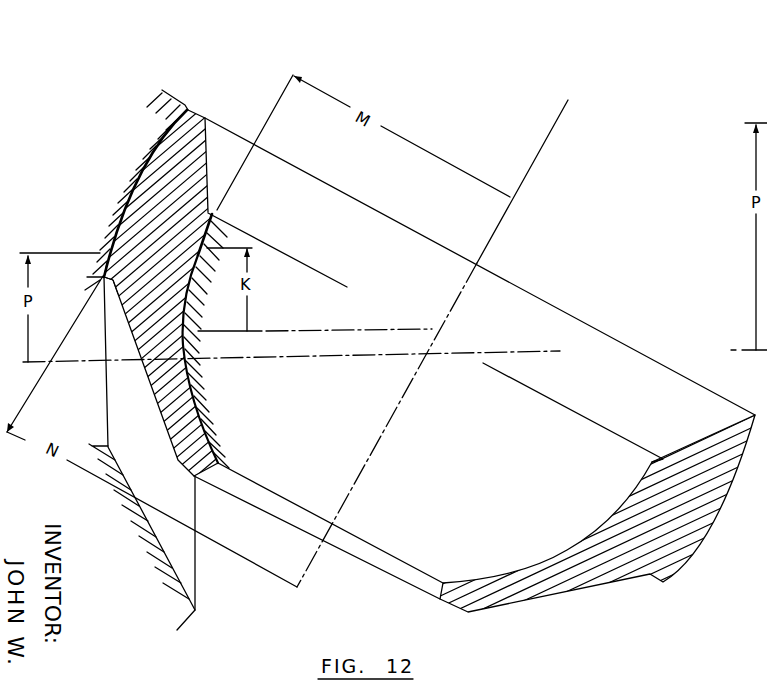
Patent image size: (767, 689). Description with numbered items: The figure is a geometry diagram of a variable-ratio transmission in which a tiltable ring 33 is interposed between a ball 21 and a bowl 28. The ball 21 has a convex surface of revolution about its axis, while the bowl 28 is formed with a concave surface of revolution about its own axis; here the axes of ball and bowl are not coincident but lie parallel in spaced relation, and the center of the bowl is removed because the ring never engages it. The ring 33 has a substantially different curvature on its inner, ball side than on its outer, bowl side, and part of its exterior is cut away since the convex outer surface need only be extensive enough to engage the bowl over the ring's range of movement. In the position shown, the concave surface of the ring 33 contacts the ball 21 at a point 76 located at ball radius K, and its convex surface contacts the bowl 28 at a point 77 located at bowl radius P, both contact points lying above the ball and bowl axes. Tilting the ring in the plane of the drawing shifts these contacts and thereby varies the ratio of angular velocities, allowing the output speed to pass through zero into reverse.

The ball 21 is at (218, 404).
The bowl 28 is at (117, 170).
The ring 33 is at (216, 117).
The contact point 76 is at (210, 245).
The contact point 77 is at (110, 252).